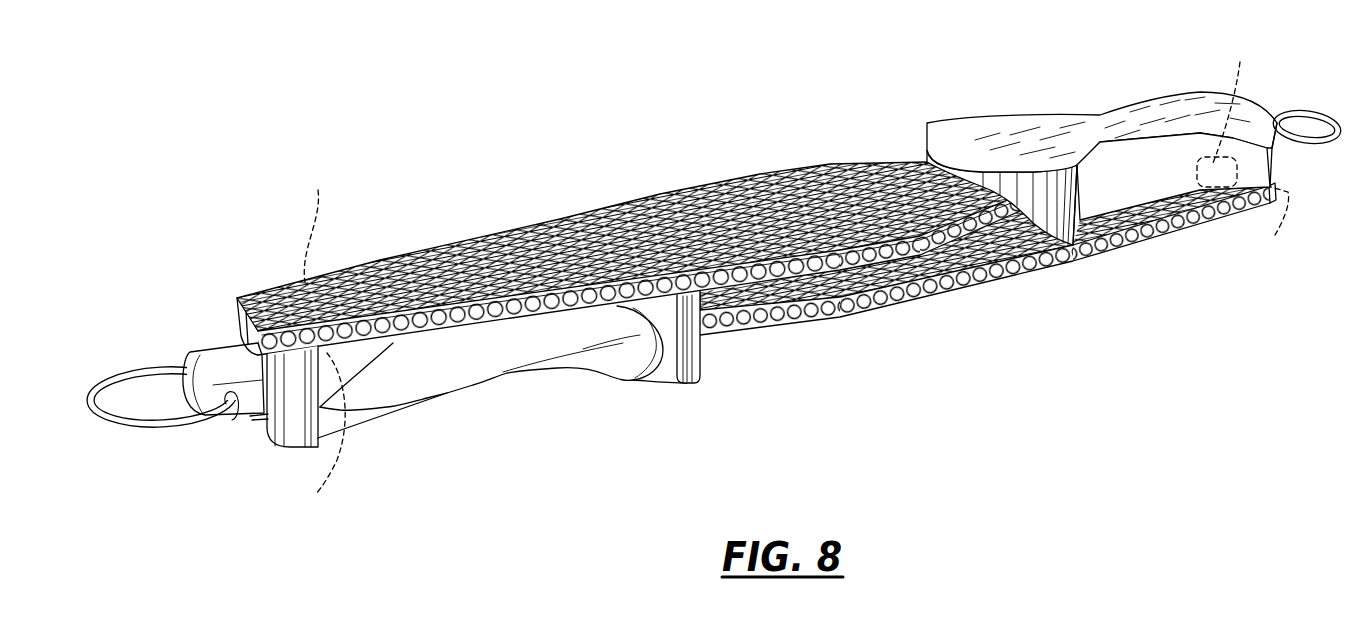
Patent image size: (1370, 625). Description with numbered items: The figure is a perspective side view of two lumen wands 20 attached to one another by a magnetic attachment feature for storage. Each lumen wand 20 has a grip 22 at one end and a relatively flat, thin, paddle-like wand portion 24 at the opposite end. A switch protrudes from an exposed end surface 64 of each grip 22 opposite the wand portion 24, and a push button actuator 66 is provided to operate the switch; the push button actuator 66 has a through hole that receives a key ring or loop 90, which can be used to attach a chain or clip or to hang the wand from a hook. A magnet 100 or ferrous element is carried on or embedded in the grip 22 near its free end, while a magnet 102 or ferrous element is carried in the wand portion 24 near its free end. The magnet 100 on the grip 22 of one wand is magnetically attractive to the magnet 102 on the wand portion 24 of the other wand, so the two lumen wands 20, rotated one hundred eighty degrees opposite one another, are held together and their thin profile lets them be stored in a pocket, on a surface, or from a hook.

The lumen wand 20 is at (520, 164).
The grip 22 is at (468, 405).
The wand portion 24 is at (398, 249).
The exposed end surface 64 is at (252, 420).
The push button actuator 66 is at (210, 367).
The key ring or loop 90 is at (153, 370).
The magnet 100 is at (1243, 145).
The magnet 102 is at (310, 338).